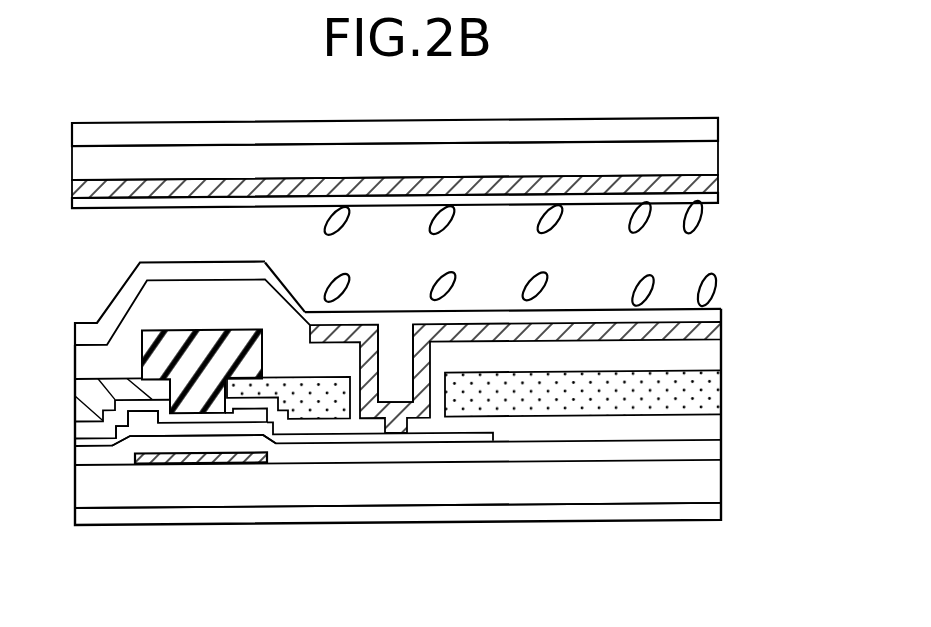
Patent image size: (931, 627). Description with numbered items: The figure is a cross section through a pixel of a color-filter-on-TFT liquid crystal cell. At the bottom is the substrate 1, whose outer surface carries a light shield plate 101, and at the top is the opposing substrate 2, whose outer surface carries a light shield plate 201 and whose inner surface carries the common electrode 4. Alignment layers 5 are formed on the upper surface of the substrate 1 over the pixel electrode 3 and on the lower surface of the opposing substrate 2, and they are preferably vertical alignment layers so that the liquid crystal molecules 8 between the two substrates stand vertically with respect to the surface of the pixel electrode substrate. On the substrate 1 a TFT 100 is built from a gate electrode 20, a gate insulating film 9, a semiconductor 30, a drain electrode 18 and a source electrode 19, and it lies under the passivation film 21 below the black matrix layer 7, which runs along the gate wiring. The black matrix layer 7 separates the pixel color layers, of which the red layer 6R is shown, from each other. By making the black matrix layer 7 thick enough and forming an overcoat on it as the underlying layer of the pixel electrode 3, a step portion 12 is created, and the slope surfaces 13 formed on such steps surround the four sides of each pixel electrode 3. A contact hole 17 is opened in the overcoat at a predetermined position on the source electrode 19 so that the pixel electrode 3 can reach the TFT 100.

The light shield plate 201 is at (710, 127).
The opposing substrate 2 is at (710, 157).
The common electrode 4 is at (710, 180).
The alignment layer 5 is at (710, 198).
The slope surface 13 is at (289, 281).
The contact hole 17 is at (395, 340).
The liquid crystal molecule 8 is at (716, 291).
The step portion 12 is at (133, 324).
The pixel electrode 3 is at (712, 333).
The black matrix layer 7 is at (150, 358).
The pixel color layer 6R is at (712, 392).
The passivation film 21 is at (713, 428).
The drain electrode 18 is at (110, 442).
The source electrode 19 is at (353, 437).
The gate insulating film 9 is at (713, 450).
The semiconductor 30 is at (147, 433).
The gate electrode 20 is at (199, 466).
The TFT 100 is at (160, 478).
The substrate 1 is at (713, 483).
The light shield plate 101 is at (713, 512).